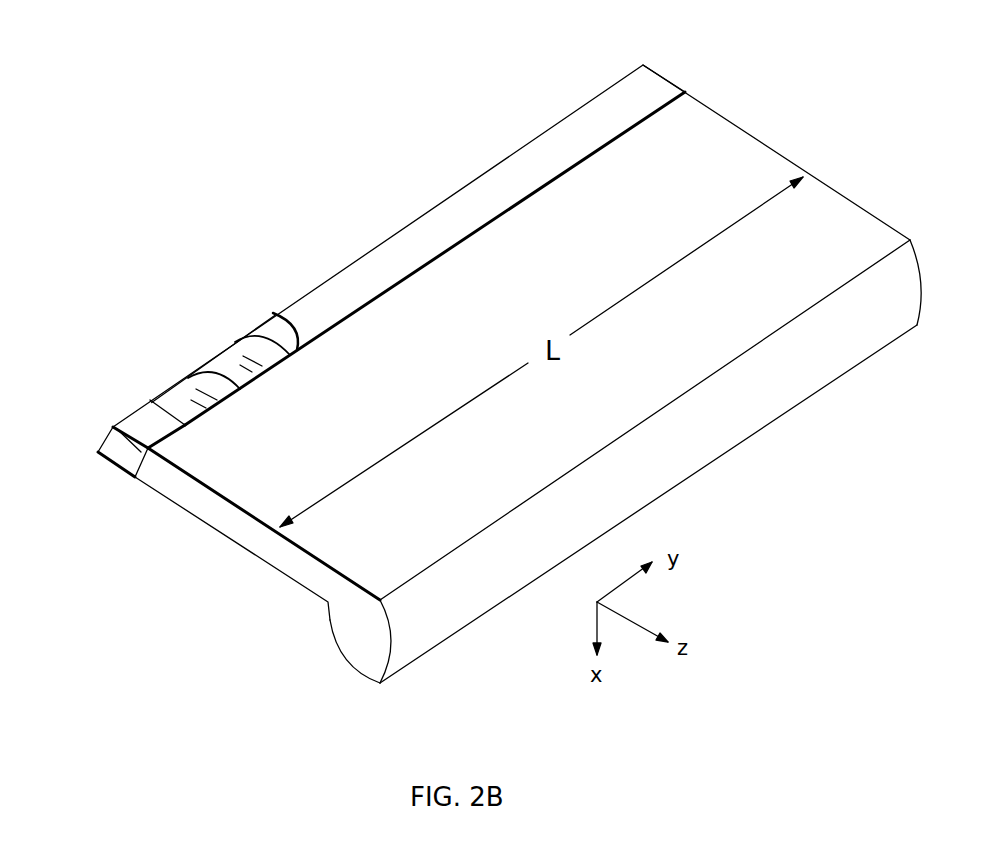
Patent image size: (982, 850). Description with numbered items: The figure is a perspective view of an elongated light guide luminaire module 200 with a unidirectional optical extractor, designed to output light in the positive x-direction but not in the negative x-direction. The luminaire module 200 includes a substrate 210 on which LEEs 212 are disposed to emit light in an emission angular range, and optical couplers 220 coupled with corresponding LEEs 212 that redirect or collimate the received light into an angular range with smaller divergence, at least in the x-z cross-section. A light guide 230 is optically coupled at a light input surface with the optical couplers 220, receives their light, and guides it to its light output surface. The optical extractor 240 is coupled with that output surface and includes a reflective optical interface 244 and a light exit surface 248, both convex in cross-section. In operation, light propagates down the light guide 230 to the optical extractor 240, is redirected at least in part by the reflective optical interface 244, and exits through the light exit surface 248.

The luminaire module 200 is at (200, 70).
The substrate 210 is at (192, 413).
The LEEs 212 is at (110, 435).
The optical couplers 220 is at (242, 358).
The light guide 230 is at (268, 490).
The optical extractor 240 is at (353, 613).
The reflective optical interface 244 is at (662, 468).
The light exit surface 248 is at (343, 658).